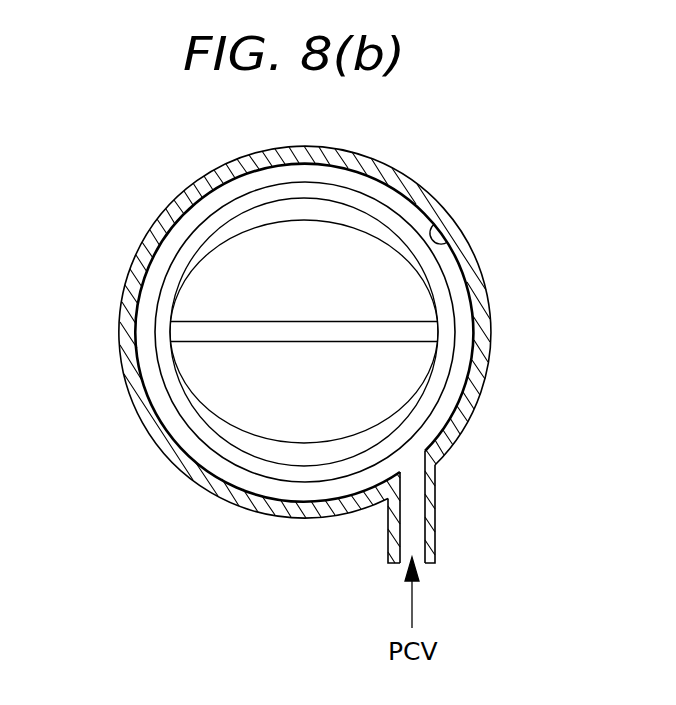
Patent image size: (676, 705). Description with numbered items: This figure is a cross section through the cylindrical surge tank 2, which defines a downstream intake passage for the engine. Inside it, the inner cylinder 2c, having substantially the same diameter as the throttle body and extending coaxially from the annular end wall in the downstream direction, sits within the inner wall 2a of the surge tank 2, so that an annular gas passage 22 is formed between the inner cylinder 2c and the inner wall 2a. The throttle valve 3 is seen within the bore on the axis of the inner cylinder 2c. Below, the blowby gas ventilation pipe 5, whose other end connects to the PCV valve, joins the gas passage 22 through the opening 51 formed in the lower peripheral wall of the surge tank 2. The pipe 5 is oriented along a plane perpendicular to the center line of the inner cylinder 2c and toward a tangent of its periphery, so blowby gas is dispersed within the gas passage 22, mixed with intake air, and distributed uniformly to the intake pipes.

The surge tank 2 is at (158, 223).
The inner wall 2a is at (447, 243).
The inner cylinder 2c is at (175, 398).
The throttle valve 3 is at (227, 281).
The gas passage 22 is at (463, 347).
The blowby gas ventilation pipe 5 is at (436, 535).
The opening 51 is at (405, 460).